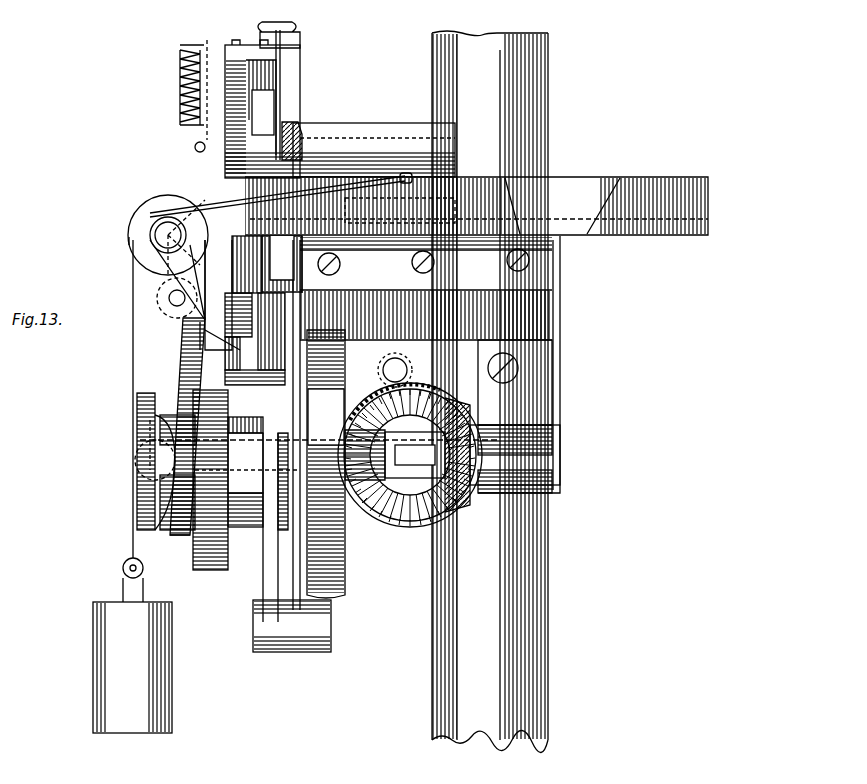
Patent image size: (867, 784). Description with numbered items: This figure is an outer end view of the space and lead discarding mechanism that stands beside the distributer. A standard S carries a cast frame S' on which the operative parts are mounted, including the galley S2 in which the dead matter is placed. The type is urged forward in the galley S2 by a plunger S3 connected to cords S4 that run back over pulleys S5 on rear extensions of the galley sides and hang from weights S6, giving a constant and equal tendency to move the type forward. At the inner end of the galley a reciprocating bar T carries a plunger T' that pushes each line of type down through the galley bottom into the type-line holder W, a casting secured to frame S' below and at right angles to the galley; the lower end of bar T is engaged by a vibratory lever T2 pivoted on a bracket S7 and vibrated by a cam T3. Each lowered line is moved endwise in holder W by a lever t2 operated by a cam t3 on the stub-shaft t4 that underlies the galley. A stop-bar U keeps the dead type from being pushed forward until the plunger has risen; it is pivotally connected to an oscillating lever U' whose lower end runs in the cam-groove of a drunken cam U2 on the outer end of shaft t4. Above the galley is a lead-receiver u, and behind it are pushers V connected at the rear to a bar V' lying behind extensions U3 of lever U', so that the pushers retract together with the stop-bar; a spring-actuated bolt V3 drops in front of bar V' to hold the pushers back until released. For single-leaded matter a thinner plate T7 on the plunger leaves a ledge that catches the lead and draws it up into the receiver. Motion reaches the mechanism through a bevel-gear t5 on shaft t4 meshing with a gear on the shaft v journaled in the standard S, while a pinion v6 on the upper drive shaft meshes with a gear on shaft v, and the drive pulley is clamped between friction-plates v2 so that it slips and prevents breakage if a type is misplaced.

The standard S is at (376, 392).
The cast frame S' is at (442, 364).
The galley S2 is at (190, 138).
The plunger S3 is at (412, 181).
The cords S4 is at (126, 419).
The pulleys S5 is at (136, 225).
The weights S6 is at (145, 667).
The bracket S7 is at (268, 578).
The reciprocating bar T is at (271, 215).
The plunger T' is at (278, 112).
The vibratory lever T2 is at (253, 366).
The cam T3 is at (317, 480).
The thinner plate T7 is at (282, 88).
The stop-bar U is at (367, 209).
The oscillating lever U' is at (182, 426).
The drunken cam U2 is at (150, 486).
The extensions of lever U' U3 is at (170, 205).
The pushers V is at (286, 124).
The bar V' is at (189, 103).
The spring-actuated bolt V3 is at (205, 58).
The type-line holder W is at (262, 245).
The lead-receiver u is at (358, 165).
The lever t2 is at (345, 566).
The cam t3 is at (326, 417).
The stub-shaft t4 is at (405, 452).
The bevel-gear t5 is at (466, 508).
The shaft v is at (380, 456).
The friction-plates v2 is at (395, 402).
The pinion v6 is at (395, 370).